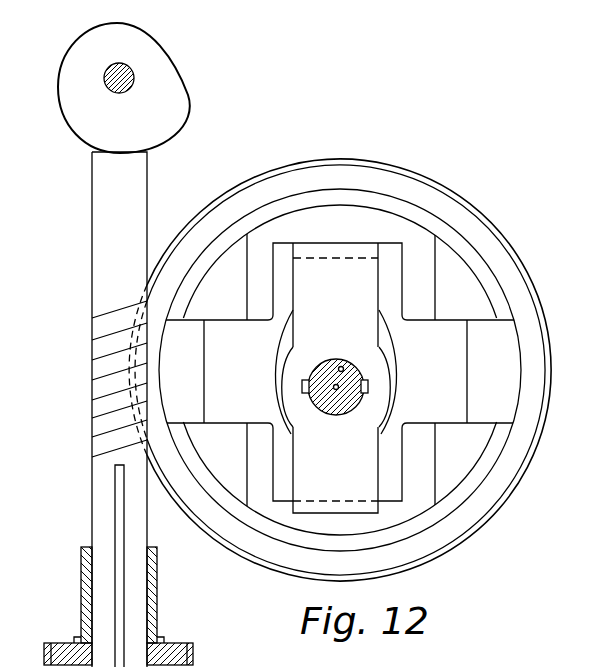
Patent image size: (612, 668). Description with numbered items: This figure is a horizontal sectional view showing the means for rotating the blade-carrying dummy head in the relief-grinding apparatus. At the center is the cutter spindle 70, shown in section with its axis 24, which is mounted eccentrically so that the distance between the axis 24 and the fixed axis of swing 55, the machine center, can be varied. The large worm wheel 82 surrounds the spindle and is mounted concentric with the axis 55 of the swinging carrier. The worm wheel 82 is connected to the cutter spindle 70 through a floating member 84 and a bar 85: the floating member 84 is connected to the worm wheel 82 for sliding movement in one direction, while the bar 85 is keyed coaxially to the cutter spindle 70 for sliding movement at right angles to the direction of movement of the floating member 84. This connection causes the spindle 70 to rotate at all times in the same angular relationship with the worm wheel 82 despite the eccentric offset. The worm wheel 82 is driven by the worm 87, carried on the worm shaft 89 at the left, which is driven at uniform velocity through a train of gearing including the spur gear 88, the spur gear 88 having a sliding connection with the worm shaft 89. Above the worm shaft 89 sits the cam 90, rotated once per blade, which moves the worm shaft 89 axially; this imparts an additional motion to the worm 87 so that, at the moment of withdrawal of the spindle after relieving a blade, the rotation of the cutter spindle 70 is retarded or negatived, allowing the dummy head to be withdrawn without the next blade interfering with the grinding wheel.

The cam 90 is at (178, 87).
The worm 87 is at (100, 431).
The worm shaft 89 is at (97, 503).
The spur gear 88 is at (193, 650).
The worm wheel 82 is at (473, 530).
The floating member 84 is at (449, 414).
The bar 85 is at (376, 366).
The cutter spindle 70 is at (348, 410).
The axis of the cutter spindle 24 is at (336, 390).
The axis of swing 55 is at (342, 366).